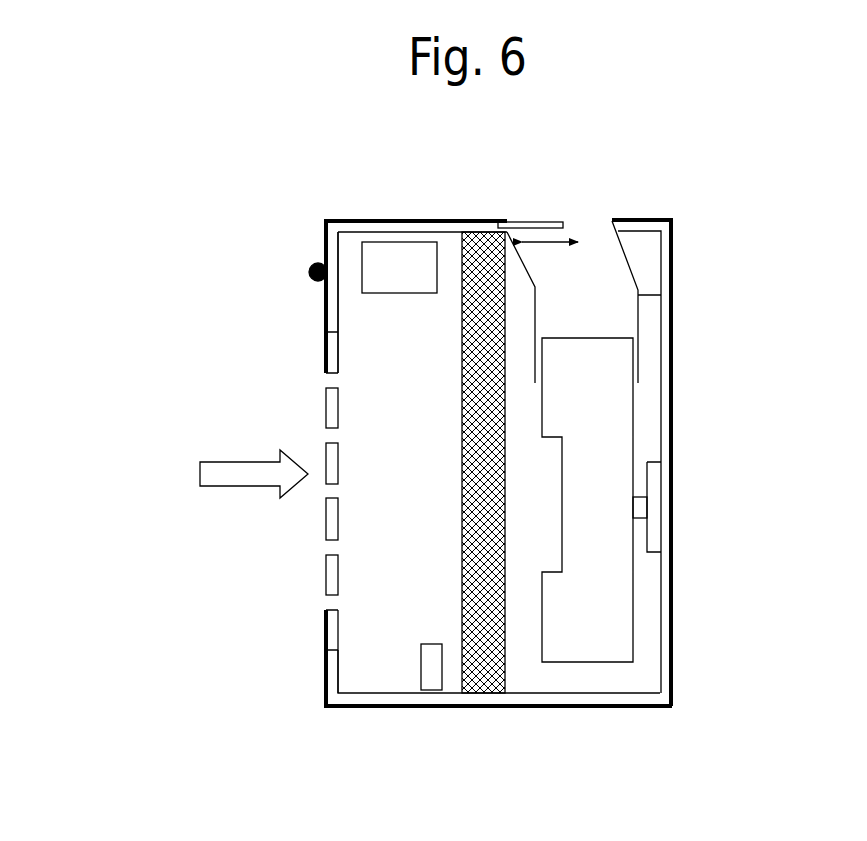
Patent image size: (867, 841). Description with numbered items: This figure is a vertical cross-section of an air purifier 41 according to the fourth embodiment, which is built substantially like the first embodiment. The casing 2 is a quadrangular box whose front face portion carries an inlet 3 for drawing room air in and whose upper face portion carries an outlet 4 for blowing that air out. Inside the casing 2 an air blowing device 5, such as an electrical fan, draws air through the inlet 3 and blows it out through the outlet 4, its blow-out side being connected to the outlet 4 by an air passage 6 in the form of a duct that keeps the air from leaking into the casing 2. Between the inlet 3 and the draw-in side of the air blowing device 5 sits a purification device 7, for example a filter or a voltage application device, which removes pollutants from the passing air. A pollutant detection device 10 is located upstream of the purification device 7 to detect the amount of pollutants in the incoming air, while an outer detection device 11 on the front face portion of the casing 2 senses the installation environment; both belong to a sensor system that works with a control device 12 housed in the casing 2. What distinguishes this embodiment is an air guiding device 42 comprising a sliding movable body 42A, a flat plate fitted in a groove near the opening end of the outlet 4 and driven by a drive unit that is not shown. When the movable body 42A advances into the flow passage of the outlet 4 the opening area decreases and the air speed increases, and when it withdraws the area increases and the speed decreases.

The air purifier 41 is at (317, 210).
The casing 2 is at (326, 316).
The inlet 3 is at (326, 551).
The outer detection device 11 is at (310, 268).
The control device 12 is at (400, 246).
The purification device 7 is at (481, 693).
The pollutant detection device 10 is at (431, 683).
The movable body 42A is at (540, 220).
The air guiding device 42 is at (522, 216).
The outlet 4 is at (593, 227).
The air passage 6 is at (640, 295).
The air blowing device 5 is at (618, 577).